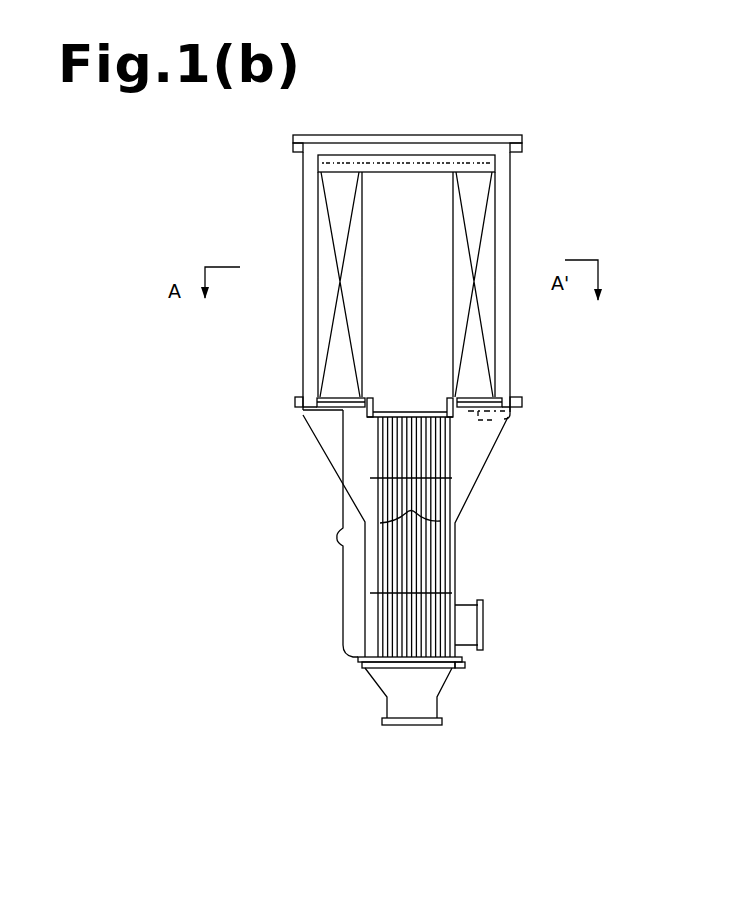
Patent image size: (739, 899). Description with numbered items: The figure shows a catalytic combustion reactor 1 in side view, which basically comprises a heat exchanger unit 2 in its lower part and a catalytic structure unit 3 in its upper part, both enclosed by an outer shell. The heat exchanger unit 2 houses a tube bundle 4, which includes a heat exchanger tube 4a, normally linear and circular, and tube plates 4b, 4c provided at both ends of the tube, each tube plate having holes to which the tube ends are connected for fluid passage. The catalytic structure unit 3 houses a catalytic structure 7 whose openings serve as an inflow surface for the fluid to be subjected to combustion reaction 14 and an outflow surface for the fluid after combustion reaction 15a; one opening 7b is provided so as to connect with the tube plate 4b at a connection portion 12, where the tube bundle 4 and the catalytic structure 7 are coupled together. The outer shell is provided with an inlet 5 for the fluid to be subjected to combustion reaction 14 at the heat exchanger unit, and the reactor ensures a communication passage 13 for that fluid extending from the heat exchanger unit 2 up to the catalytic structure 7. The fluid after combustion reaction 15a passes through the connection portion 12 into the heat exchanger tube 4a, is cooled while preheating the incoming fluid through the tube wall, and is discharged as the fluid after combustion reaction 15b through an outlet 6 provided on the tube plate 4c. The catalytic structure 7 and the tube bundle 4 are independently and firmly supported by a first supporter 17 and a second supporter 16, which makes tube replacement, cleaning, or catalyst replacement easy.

The catalytic combustion reactor 1 is at (301, 215).
The heat exchanger unit 2 is at (587, 663).
The catalytic structure unit 3 is at (575, 153).
The tube bundle 4 is at (405, 533).
The heat exchanger tube 4a is at (418, 509).
The tube plate 4b is at (449, 415).
The tube plate 4c is at (460, 669).
The inlet 5 is at (480, 622).
The outlet 6 is at (440, 697).
The catalytic structure 7 is at (463, 284).
The opening of the catalytic structure 7b is at (452, 397).
The connection portion 12 is at (360, 410).
The communication passage 13 is at (313, 396).
The fluid to be subjected to combustion reaction 14 is at (494, 623).
The fluid after combustion reaction 15a is at (408, 408).
The fluid after combustion reaction 15b is at (413, 670).
The second supporter 16 is at (465, 657).
The first supporter 17 is at (503, 416).